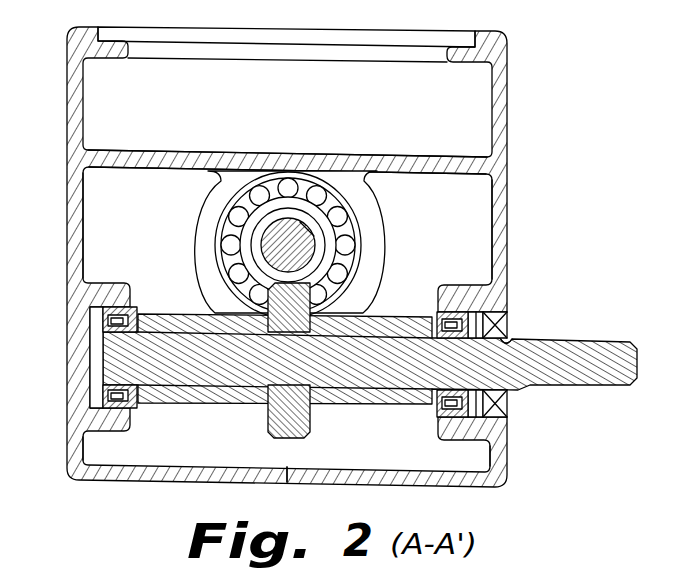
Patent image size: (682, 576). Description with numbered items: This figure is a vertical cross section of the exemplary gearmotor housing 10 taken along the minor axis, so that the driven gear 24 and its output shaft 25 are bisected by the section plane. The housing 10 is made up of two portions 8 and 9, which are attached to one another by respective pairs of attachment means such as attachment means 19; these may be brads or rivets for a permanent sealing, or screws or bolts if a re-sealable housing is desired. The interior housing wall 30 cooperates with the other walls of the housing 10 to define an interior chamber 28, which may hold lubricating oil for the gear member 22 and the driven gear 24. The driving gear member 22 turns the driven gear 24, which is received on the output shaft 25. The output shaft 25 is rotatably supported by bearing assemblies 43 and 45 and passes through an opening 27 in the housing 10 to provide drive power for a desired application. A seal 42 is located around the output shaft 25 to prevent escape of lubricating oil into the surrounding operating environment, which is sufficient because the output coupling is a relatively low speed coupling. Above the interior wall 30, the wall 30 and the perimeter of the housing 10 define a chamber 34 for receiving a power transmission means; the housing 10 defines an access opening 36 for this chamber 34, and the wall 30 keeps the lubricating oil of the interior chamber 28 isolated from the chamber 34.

The housing 10 is at (158, 491).
The interior chamber 28 is at (103, 208).
The interior housing wall 30 is at (372, 156).
The access opening 36 is at (200, 47).
The chamber 34 is at (297, 117).
The housing portion 9 is at (241, 483).
The housing portion 8 is at (291, 483).
The attachment means 19 is at (350, 210).
The gear member 22 is at (340, 246).
The output shaft 25 is at (582, 388).
The opening 27 is at (506, 342).
The driven gear 24 is at (268, 432).
The bearing assembly 43 is at (132, 310).
The bearing assembly 45 is at (433, 316).
The seal 42 is at (507, 405).